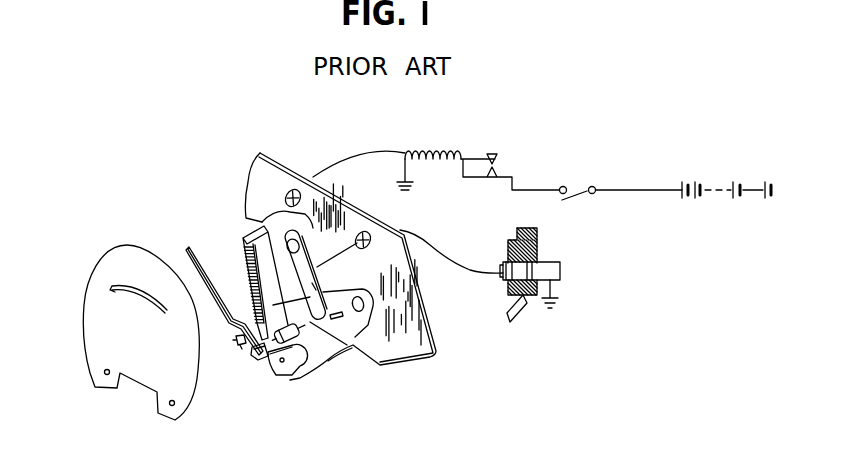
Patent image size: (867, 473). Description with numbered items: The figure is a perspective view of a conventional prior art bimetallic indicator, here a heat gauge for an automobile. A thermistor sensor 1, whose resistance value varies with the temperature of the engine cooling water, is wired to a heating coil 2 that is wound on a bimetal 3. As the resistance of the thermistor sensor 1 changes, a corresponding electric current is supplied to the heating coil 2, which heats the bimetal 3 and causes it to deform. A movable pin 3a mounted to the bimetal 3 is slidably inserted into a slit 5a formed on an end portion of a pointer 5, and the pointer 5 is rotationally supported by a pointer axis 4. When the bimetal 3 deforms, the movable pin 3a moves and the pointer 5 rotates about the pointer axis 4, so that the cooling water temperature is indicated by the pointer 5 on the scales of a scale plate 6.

The thermistor sensor 1 is at (560, 273).
The heating coil 2 is at (243, 272).
The bimetal 3 is at (242, 228).
The movable pin 3a is at (237, 344).
The pointer axis 4 is at (280, 368).
The pointer 5 is at (191, 268).
The slit 5a is at (246, 358).
The scale plate 6 is at (100, 355).